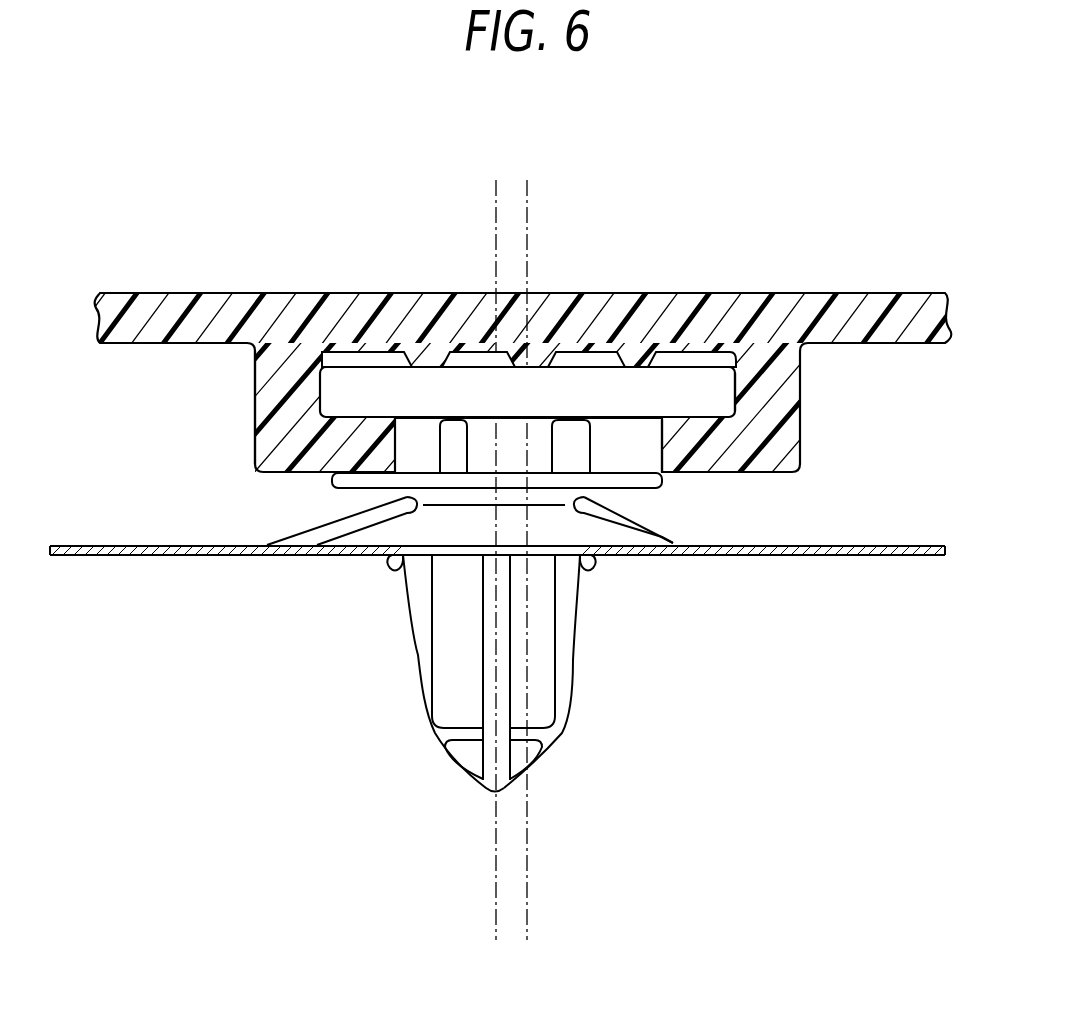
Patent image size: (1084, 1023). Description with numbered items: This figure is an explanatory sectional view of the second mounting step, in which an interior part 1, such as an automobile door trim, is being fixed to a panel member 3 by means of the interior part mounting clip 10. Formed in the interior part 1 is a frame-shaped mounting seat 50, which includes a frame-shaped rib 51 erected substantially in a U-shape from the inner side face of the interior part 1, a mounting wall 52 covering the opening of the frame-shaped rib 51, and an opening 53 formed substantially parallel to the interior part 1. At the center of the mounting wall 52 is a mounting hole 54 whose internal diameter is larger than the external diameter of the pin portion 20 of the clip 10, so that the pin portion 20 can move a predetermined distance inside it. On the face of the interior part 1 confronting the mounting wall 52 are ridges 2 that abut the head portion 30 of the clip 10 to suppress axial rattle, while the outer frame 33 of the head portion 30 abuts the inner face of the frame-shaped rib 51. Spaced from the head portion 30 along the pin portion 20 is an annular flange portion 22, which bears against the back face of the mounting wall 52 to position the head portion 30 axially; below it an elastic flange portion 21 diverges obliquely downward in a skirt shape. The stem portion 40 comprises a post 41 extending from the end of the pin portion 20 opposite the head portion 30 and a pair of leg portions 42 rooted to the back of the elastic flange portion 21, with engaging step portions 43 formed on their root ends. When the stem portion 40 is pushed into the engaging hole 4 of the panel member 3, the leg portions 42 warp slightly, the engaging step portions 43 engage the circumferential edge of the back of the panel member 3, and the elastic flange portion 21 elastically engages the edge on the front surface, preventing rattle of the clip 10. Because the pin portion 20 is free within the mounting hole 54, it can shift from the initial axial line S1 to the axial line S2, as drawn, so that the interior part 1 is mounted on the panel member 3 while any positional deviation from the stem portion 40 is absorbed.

The interior part 1 is at (437, 293).
The ridges 2 is at (367, 352).
The panel member 3 is at (862, 557).
The engaging hole 4 is at (383, 557).
The interior part mounting clip 10 is at (513, 645).
The pin portion 20 is at (433, 455).
The elastic flange portion 21 is at (677, 543).
The annular flange portion 22 is at (660, 482).
The head portion 30 is at (566, 356).
The outer frame 33 is at (698, 385).
The stem portion 40 is at (496, 673).
The post 41 is at (487, 690).
The leg portions 42 is at (577, 642).
The engaging step portions 43 is at (585, 577).
The mounting seat 50 is at (811, 389).
The frame-shaped rib 51 is at (770, 422).
The mounting wall 52 is at (303, 473).
The opening 53 is at (333, 359).
The mounting hole 54 is at (258, 553).
The axial line S1 is at (533, 190).
The axial line S2 is at (492, 910).